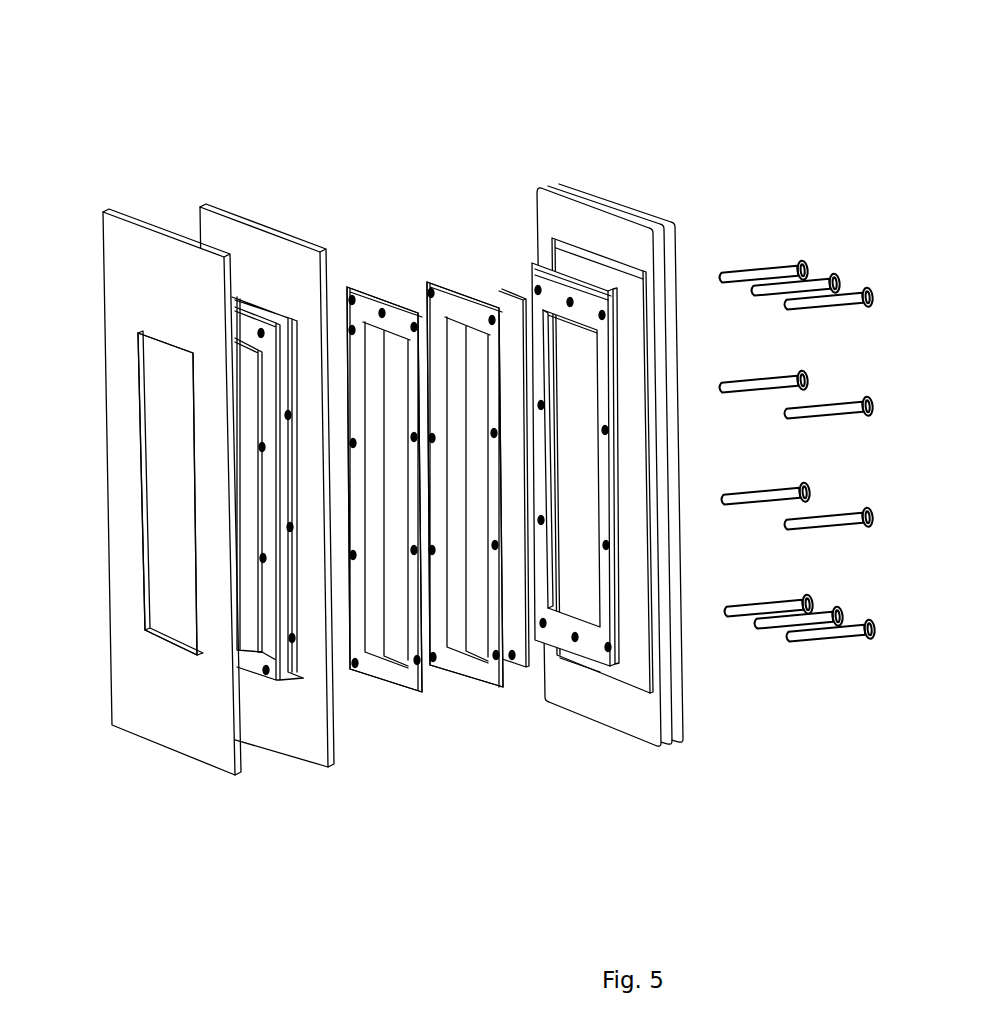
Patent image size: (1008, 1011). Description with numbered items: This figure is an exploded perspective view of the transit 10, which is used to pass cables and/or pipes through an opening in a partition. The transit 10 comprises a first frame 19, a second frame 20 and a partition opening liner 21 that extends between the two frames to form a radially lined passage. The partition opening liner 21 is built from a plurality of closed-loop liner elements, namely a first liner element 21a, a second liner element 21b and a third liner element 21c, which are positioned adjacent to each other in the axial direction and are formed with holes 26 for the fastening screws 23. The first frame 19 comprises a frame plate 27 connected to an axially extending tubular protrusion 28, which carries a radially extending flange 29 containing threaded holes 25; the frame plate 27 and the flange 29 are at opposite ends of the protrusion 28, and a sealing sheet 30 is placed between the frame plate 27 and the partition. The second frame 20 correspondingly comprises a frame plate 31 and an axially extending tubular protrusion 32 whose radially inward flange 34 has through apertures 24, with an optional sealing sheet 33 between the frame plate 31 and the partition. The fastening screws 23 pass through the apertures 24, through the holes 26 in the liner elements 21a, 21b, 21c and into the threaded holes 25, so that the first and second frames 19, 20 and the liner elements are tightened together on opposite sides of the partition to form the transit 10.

The transit 10 is at (352, 68).
The first frame 19 is at (150, 182).
The second frame 20 is at (538, 155).
The partition opening liner 21 is at (403, 255).
The first liner element 21a is at (356, 698).
The second liner element 21b is at (512, 655).
The third liner element 21c is at (438, 690).
The fastening screws 23 is at (745, 268).
The through apertures 24 is at (617, 665).
The threaded holes 25 is at (272, 677).
The holes 26 is at (455, 300).
The frame plate 27 is at (128, 467).
The tubular protrusion 28 is at (160, 412).
The flange 29 is at (265, 612).
The sealing sheet 30 is at (330, 760).
The frame plate 31 is at (600, 197).
The tubular protrusion 32 is at (630, 650).
The sealing sheet 33 is at (628, 235).
The flange 34 is at (587, 655).